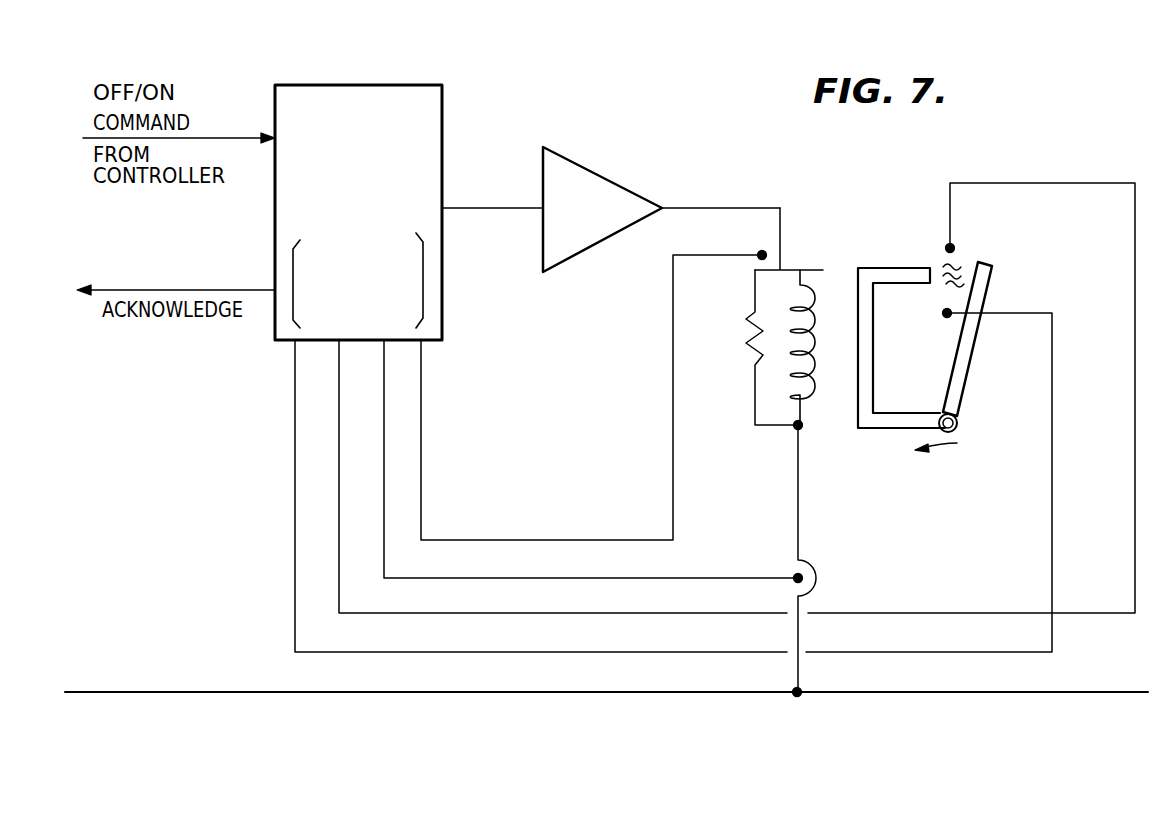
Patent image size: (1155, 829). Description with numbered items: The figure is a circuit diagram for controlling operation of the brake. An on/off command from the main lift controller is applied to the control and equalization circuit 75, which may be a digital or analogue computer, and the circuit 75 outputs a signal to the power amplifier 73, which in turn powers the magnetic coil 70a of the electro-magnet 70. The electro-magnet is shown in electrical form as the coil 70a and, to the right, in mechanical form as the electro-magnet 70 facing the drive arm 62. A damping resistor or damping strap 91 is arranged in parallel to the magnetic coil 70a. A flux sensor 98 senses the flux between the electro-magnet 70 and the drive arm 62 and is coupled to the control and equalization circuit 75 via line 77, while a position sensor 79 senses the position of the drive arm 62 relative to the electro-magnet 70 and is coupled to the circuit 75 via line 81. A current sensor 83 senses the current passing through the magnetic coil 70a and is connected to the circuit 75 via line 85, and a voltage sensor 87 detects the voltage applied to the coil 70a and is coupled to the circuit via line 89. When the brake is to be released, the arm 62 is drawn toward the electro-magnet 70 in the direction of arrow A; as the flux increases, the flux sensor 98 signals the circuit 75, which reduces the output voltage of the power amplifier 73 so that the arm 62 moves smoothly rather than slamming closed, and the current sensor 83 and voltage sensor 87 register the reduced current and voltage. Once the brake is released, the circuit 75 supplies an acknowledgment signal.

The control and equalization circuit 75 is at (442, 123).
The power amplifier 73 is at (580, 160).
The voltage sensor 87 is at (760, 250).
The magnetic coil 70a is at (800, 282).
The electro-magnet 70 is at (860, 340).
The flux sensor 98 is at (952, 246).
The line 77 is at (339, 483).
The line 81 is at (295, 436).
The position sensor 79 is at (944, 316).
The drive arm 62 is at (968, 378).
The damping resistor 91 is at (755, 378).
The current sensor 83 is at (793, 568).
The line 89 is at (421, 412).
The line 85 is at (384, 460).